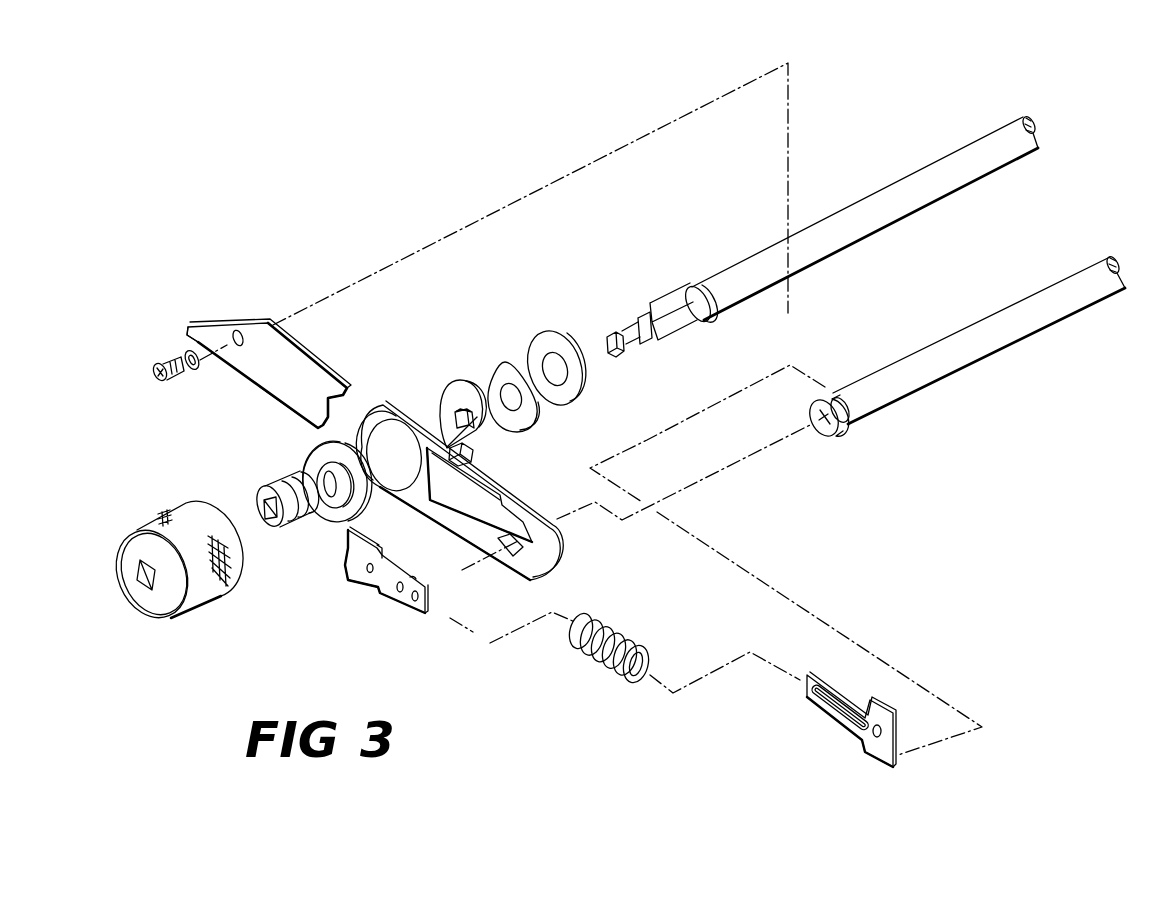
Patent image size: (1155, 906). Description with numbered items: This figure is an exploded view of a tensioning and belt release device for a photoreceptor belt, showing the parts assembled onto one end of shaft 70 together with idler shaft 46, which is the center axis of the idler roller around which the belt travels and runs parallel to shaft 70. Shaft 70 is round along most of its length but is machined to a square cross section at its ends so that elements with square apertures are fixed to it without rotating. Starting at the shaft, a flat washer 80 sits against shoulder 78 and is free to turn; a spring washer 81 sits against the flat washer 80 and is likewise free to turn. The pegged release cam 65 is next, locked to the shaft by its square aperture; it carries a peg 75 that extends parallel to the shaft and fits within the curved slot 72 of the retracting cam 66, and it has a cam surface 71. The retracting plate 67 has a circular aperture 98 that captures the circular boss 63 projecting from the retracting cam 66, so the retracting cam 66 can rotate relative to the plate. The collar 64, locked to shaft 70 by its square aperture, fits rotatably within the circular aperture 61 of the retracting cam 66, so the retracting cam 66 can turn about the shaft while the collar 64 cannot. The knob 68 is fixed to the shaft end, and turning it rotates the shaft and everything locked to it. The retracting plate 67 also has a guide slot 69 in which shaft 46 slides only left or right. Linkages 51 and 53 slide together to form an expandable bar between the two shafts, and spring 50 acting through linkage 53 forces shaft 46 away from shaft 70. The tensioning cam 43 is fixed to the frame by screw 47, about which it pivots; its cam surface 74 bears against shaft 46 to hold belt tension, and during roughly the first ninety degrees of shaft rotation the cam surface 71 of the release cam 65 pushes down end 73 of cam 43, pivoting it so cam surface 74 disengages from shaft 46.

The tensioning cam 43 is at (323, 367).
The idler shaft 46 is at (915, 377).
The screw 47 is at (165, 368).
The spring 50 is at (630, 688).
The linkage 51 is at (367, 590).
The linkage 53 is at (873, 753).
The circular aperture 61 is at (330, 508).
The circular boss 63 is at (347, 430).
The collar 64 is at (280, 532).
The pegged release cam 65 is at (455, 390).
The retracting cam 66 is at (307, 462).
The retracting plate 67 is at (542, 558).
The knob 68 is at (202, 590).
The guide slot 69 is at (515, 548).
The shaft 70 is at (670, 322).
The cam surface 71 is at (472, 446).
The curved slot 72 is at (350, 493).
The end 73 is at (189, 333).
The cam surface 74 is at (326, 430).
The peg 75 is at (478, 432).
The shoulder 78 is at (685, 293).
The flat washer 80 is at (565, 348).
The spring washer 81 is at (511, 362).
The circular aperture 98 is at (380, 430).